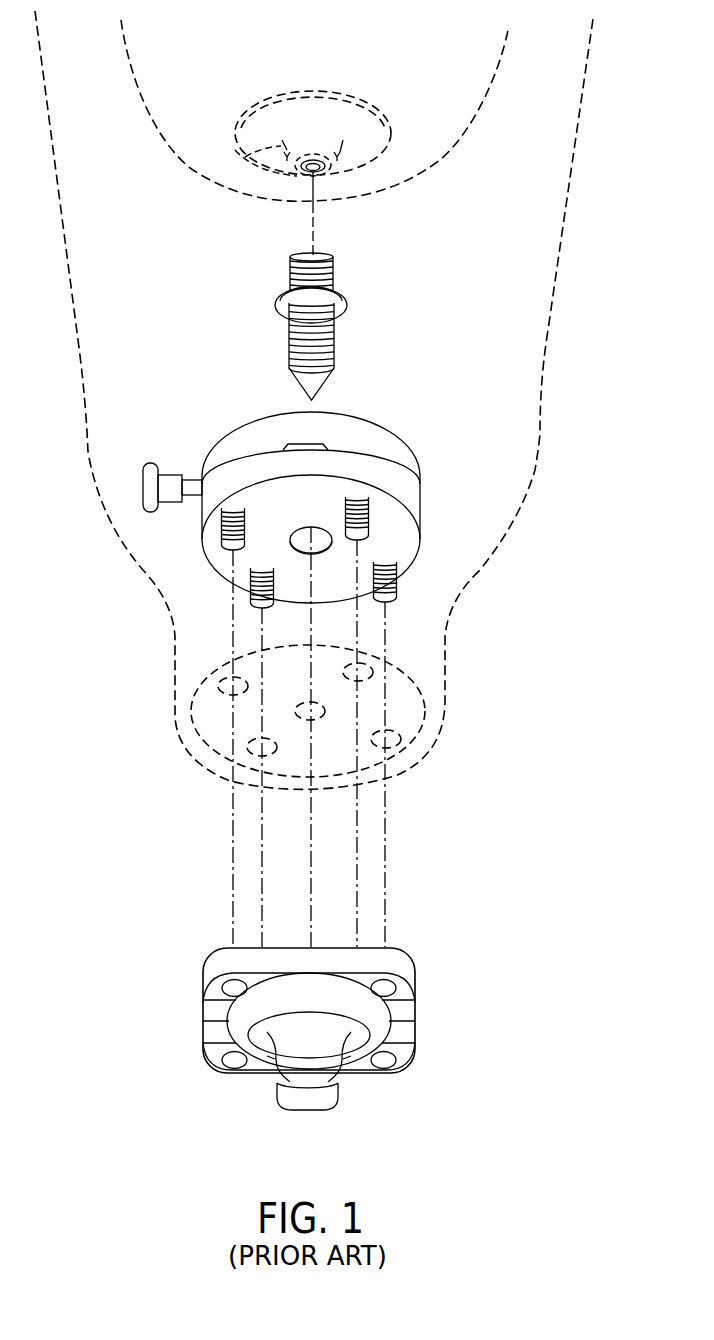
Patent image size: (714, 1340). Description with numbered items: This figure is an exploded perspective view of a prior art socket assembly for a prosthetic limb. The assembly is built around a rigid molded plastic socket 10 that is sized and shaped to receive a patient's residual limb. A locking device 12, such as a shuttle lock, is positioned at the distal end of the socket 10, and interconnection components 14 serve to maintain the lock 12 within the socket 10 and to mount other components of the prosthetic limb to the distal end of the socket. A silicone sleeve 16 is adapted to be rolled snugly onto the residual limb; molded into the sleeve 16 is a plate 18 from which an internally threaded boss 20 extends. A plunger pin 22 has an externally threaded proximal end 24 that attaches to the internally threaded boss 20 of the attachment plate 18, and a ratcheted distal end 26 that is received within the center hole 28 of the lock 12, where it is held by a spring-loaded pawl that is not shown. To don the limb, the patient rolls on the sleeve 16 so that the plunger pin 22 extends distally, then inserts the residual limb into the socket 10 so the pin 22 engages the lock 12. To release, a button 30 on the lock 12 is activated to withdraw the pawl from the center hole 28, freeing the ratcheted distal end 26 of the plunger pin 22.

The rigid molded plastic socket 10 is at (561, 217).
The locking device 12 is at (277, 504).
The interconnection components 14 is at (172, 958).
The silicone sleeve 16 is at (431, 168).
The plate 18 is at (367, 106).
The internally threaded boss 20 is at (235, 150).
The plunger pin 22 is at (312, 320).
The externally threaded proximal end 24 is at (290, 273).
The ratcheted distal end 26 is at (290, 340).
The center hole 28 is at (299, 531).
The button 30 is at (152, 462).